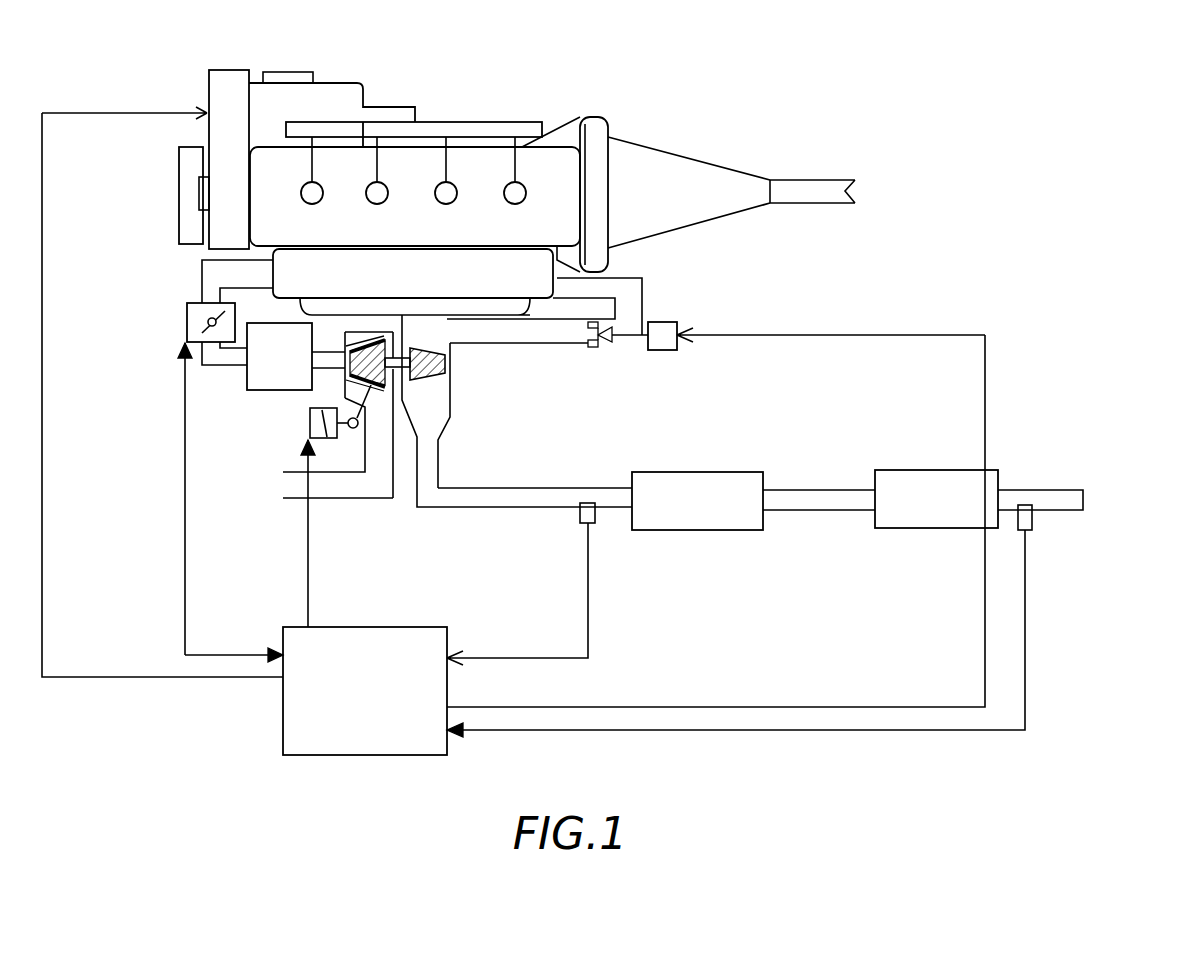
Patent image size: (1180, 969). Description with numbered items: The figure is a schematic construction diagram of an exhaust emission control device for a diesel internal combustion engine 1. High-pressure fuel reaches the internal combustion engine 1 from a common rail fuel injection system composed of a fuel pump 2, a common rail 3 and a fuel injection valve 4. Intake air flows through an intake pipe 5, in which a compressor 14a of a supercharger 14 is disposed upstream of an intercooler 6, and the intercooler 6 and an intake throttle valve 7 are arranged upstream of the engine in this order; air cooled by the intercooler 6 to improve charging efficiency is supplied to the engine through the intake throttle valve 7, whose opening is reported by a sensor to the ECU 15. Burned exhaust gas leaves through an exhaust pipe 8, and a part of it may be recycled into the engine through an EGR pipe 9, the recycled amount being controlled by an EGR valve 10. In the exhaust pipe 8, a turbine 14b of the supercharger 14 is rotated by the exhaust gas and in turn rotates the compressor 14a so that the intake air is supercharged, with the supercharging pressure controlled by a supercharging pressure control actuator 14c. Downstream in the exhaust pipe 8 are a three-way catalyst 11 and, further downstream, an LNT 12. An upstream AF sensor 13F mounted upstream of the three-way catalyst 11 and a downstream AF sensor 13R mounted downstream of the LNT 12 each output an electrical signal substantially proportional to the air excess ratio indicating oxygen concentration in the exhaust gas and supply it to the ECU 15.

The internal combustion engine 1 is at (547, 109).
The fuel pump 2 is at (337, 83).
The common rail 3 is at (429, 122).
The fuel injection valve 4 is at (504, 192).
The intake pipe 5 is at (340, 485).
The intercooler 6 is at (247, 380).
The intake throttle valve 7 is at (187, 320).
The exhaust pipe 8 is at (443, 453).
The EGR pipe 9 is at (642, 293).
The EGR valve 10 is at (678, 348).
The three-way catalyst 11 is at (683, 472).
The NOx trap catalyst (LNT) 12 is at (997, 475).
The upstream AF sensor 13F is at (597, 522).
The downstream AF sensor 13R is at (1033, 528).
The supercharger 14 is at (345, 370).
The compressor 14a is at (372, 388).
The turbine 14b is at (435, 379).
The supercharging pressure control actuator 14c is at (308, 427).
The ECU (electronic control unit) 15 is at (288, 723).